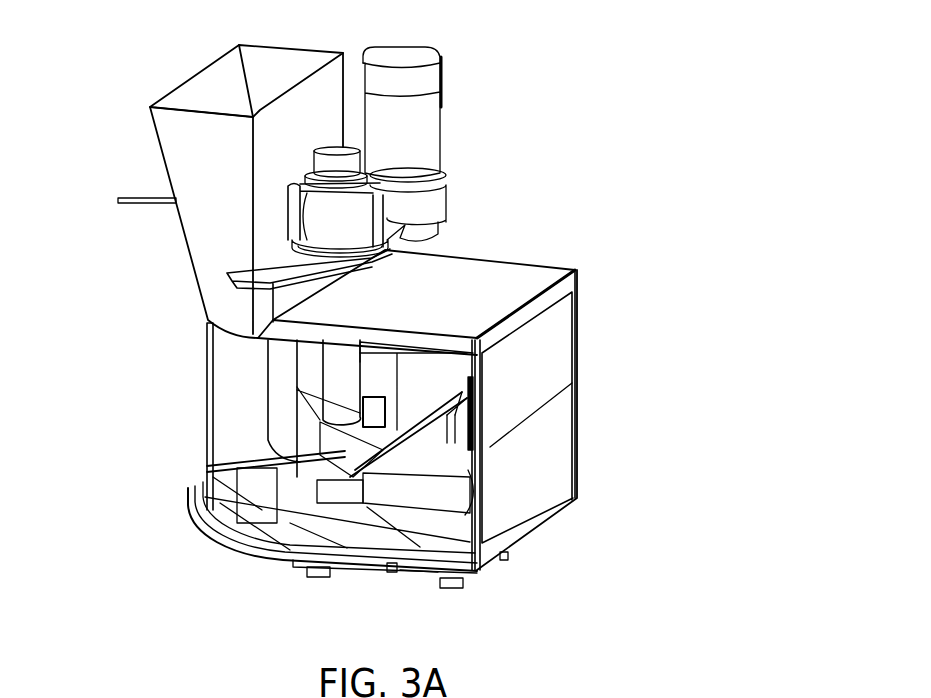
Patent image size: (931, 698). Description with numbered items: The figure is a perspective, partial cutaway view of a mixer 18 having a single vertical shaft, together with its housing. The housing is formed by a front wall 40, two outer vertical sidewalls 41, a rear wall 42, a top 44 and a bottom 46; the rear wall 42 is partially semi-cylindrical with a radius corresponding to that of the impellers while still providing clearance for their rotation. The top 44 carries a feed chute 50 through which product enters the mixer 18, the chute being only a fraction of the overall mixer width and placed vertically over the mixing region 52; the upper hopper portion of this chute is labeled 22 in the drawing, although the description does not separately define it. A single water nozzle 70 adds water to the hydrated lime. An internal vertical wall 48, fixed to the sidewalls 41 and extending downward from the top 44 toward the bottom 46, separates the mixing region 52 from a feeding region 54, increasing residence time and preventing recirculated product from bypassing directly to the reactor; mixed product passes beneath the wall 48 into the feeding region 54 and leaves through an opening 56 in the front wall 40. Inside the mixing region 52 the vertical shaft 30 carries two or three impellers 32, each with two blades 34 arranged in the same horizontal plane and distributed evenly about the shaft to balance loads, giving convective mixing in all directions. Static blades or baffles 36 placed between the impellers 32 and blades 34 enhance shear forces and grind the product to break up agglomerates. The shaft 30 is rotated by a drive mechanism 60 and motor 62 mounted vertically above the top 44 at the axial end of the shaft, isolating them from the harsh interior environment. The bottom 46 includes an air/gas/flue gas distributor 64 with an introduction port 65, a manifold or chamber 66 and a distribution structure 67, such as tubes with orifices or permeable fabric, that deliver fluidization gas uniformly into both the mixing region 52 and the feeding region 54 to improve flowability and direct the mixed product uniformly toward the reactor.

The mixer 18 is at (472, 45).
The hopper 22 is at (288, 44).
The feed chute 50 is at (222, 95).
The water nozzle 70 is at (118, 200).
The motor 62 is at (440, 117).
The drive mechanism 60 is at (387, 203).
The top 44 is at (510, 260).
The outer vertical sidewall 41 is at (548, 260).
The opening 56 is at (525, 364).
The internal vertical wall 48 is at (437, 400).
The feeding region 54 is at (466, 432).
The front wall 40 is at (382, 387).
The air/gas/flue gas distributor 64 is at (517, 564).
The vertical shaft 30 is at (330, 365).
The rear wall 42 is at (207, 382).
The mixing region 52 is at (283, 410).
The blades 34 is at (310, 485).
The static blades or baffles 36 is at (200, 532).
The bottom 46 is at (228, 552).
The impeller 32 is at (312, 485).
The introduction port 65 is at (311, 576).
The manifold or chamber 66 is at (397, 578).
The distribution structure 67 is at (425, 580).